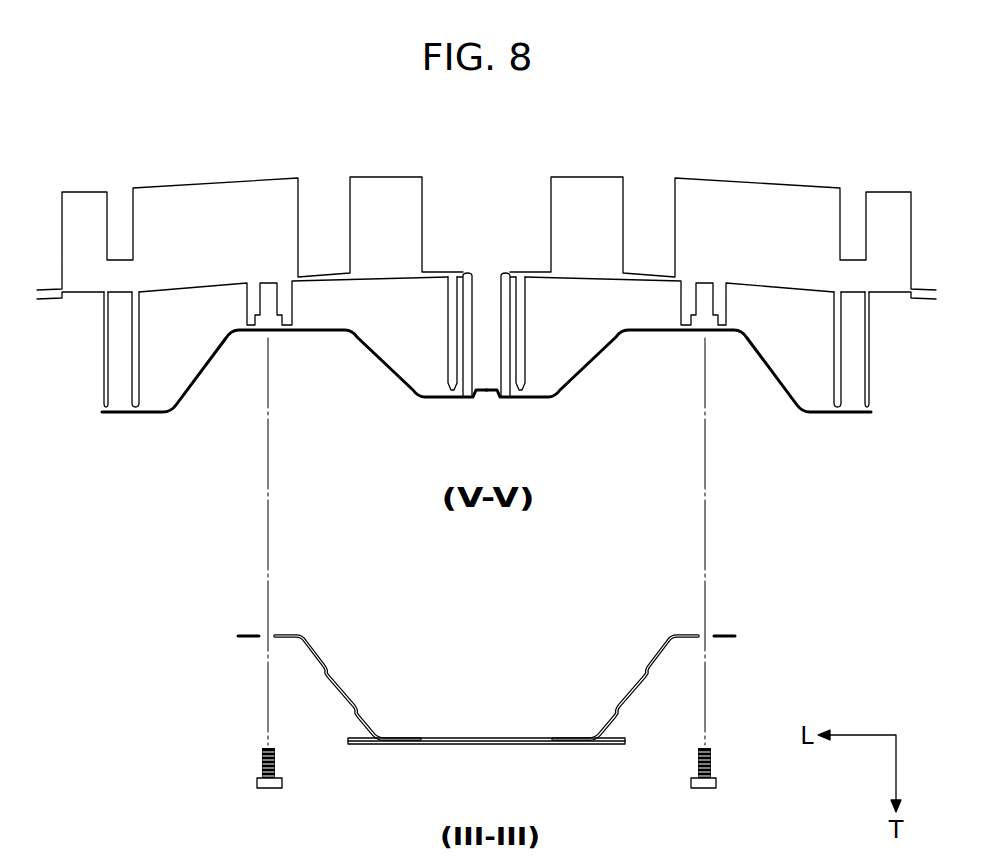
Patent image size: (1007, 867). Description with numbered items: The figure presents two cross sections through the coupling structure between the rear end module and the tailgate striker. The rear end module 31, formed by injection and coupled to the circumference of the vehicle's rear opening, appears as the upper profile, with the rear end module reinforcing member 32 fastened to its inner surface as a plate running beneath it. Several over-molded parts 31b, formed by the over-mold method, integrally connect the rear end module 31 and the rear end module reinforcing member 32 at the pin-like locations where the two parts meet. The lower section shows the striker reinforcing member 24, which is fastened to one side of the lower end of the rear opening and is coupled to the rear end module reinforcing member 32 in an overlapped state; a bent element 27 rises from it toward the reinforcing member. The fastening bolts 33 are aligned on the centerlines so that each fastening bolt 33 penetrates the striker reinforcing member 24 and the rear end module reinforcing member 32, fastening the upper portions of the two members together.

The rear end module 31 is at (746, 227).
The over-molded part 31b is at (113, 335).
The rear end module reinforcing member 32 is at (433, 400).
The bracket 27 is at (348, 695).
The striker reinforcing member 24 is at (517, 744).
The fastening bolt 33 is at (255, 780).